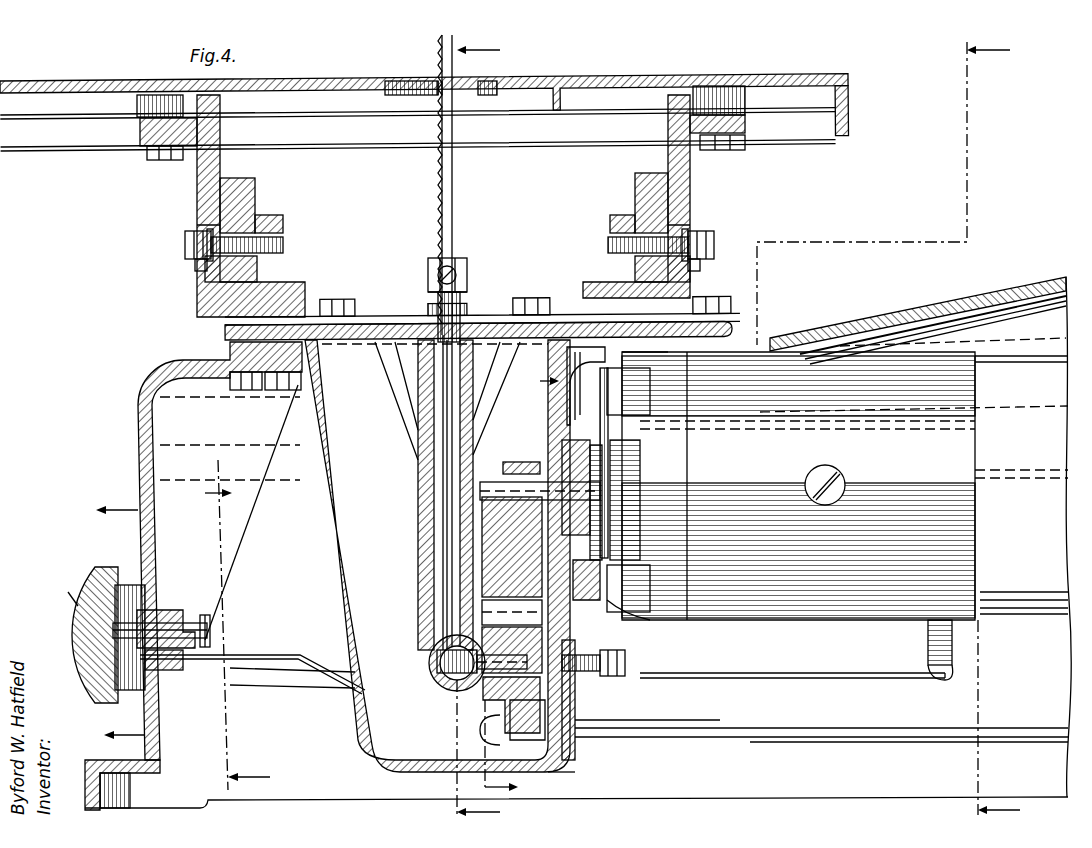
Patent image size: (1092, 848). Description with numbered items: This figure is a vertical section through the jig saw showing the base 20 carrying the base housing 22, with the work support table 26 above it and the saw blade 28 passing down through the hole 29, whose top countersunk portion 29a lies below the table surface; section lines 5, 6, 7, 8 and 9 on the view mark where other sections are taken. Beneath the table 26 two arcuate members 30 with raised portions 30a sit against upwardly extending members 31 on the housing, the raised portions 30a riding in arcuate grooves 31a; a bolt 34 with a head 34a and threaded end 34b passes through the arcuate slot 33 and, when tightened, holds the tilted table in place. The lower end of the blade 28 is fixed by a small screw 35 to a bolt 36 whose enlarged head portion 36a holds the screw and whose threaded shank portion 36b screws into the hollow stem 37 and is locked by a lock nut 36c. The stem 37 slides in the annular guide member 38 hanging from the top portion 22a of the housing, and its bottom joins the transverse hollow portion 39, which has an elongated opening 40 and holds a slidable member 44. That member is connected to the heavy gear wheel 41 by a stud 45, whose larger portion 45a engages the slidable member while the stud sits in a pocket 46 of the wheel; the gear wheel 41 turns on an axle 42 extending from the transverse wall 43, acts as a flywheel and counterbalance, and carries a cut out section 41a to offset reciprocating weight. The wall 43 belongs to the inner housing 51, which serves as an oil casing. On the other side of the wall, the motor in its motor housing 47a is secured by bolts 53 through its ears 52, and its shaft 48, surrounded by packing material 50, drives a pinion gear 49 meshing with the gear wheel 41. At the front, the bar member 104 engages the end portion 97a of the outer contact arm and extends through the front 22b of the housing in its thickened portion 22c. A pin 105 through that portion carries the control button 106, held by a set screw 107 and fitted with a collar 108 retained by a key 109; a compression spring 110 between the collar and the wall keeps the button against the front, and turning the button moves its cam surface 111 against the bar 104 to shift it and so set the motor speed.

The section line 5— 5 is at (478, 432).
The section line 6— 6 is at (522, 584).
The section line 7— 7 is at (888, 431).
The section line 8— 8 is at (120, 623).
The section line 9— 9 is at (237, 625).
The base 20 is at (108, 765).
The base housing 22 is at (846, 332).
The top portion of base housing 22a is at (572, 325).
The front of base housing 22b is at (139, 410).
The thickened portion of front 22c is at (216, 618).
The work support table 26 is at (848, 103).
The saw blade 28 is at (453, 192).
The hole 29 is at (488, 82).
The top countersunk portion 29a is at (396, 82).
The arcuate member 30 is at (205, 170).
The arcuate raised portion 30a is at (215, 230).
The upwardly extending member 31 is at (256, 212).
The arcuate groove 31a is at (252, 197).
The arcuate slot 33 is at (248, 237).
The bolt 34 is at (185, 246).
The bolt head 34a is at (200, 268).
The threaded end of bolt 34b is at (276, 245).
The small screw 35 is at (438, 273).
The bolt 36 is at (467, 282).
The enlarged head portion 36a is at (436, 297).
The threaded shank portion 36b is at (460, 312).
The lock nut 36c is at (428, 310).
The hollow stem 37 is at (435, 570).
The guide member 38 is at (420, 510).
The transverse hollow portion 39 is at (432, 640).
The elongated opening 40 is at (480, 690).
The heavy gear wheel 41 is at (576, 722).
The cut out section 41a is at (572, 748).
The axle 42 is at (588, 648).
The transverse wall 43 is at (575, 697).
The slidable member 44 is at (452, 690).
The stud 45 is at (480, 730).
The enlarged portion of stud 45a is at (442, 660).
The pocket 46 is at (550, 710).
The motor housing 47a is at (748, 612).
The motor shaft 48 is at (528, 478).
The pinion gear 49 is at (512, 460).
The packing material 50 is at (562, 428).
The inner housing 51 is at (333, 540).
The ears 52 is at (565, 380).
The bolts 53 is at (735, 330).
The end portion of outer contact arm 97a is at (928, 648).
The bar member 104 is at (258, 674).
The pin 105 is at (192, 628).
The control button 106 is at (104, 585).
The set screw 107 is at (118, 692).
The collar 108 is at (208, 628).
The key 109 is at (211, 641).
The compression spring 110 is at (215, 657).
The cam surface 111 is at (68, 600).